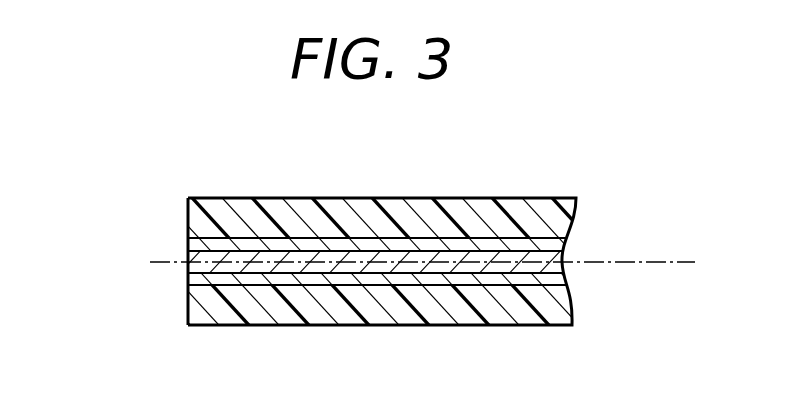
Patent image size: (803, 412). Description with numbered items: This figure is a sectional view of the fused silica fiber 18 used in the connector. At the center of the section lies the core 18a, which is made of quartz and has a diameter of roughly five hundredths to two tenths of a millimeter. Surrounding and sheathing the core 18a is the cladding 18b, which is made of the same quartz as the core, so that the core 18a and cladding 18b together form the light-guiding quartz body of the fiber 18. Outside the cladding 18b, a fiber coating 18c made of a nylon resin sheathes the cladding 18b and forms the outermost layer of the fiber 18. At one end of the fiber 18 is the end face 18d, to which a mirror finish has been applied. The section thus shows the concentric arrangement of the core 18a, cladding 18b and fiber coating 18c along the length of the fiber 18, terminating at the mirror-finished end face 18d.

The fused silica fiber 18 is at (386, 265).
The core 18a is at (433, 266).
The cladding 18b is at (487, 243).
The fiber coating 18c is at (323, 317).
The end face 18d is at (188, 298).